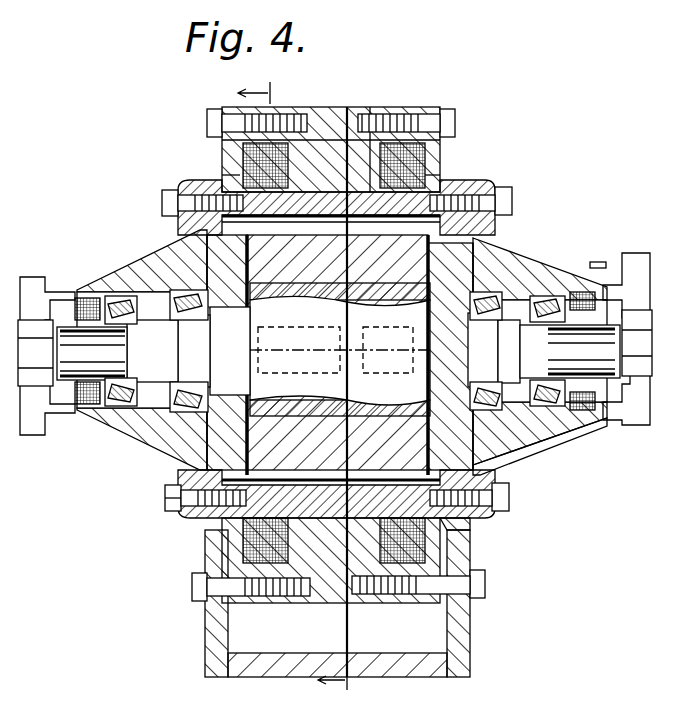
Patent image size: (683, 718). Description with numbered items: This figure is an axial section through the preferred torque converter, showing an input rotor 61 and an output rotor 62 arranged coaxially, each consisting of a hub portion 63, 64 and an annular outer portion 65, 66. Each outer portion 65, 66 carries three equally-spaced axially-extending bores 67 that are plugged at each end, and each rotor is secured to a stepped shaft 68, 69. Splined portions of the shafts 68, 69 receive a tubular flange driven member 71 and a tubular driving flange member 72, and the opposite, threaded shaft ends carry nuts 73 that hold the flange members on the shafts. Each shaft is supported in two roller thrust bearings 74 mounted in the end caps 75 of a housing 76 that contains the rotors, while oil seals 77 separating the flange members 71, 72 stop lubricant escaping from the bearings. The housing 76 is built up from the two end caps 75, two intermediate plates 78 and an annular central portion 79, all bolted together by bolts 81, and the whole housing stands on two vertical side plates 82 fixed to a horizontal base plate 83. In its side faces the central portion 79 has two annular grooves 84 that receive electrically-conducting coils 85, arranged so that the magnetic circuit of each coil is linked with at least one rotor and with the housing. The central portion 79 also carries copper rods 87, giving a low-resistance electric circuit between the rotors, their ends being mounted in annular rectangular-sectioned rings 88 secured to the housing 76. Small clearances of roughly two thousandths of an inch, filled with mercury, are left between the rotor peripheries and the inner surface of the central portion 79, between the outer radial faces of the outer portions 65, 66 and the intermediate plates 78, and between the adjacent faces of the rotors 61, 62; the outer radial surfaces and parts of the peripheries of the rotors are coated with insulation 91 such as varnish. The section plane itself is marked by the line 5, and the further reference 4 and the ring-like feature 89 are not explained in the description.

The housing section 4 is at (590, 254).
The section line 5 is at (300, 388).
The input rotor 61 is at (310, 235).
The output rotor 62 is at (372, 140).
The hub portion 63 is at (340, 349).
The hub portion 64 is at (388, 350).
The annular outer portion 65 is at (165, 498).
The annular outer portion 66 is at (435, 512).
The axially-extending bores 67 is at (378, 372).
The stepped shaft 68 is at (153, 351).
The stepped shaft 69 is at (544, 350).
The tubular flange driven member 71 is at (40, 300).
The tubular driving flange member 72 is at (640, 300).
The nuts 73 is at (40, 390).
The roller thrust bearings 74 is at (125, 300).
The end caps 75 is at (105, 290).
The housing 76 is at (500, 295).
The oil seals 77 is at (85, 298).
The intermediate plates 78 is at (222, 175).
The annular central portion 79 is at (359, 107).
The bolts 81 is at (207, 120).
The vertical side plates 82 is at (212, 632).
The horizontal base plate 83 is at (425, 660).
The annular grooves 84 is at (300, 130).
The electrically-conducting coils 85 is at (243, 165).
The copper rods 87 is at (470, 210).
The rings 88 is at (222, 185).
The housing flange 89 is at (520, 415).
The insulation 91 is at (215, 460).